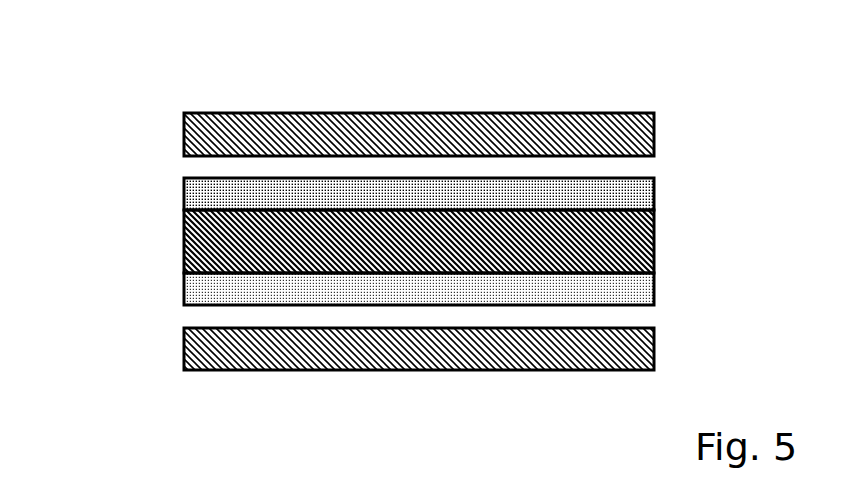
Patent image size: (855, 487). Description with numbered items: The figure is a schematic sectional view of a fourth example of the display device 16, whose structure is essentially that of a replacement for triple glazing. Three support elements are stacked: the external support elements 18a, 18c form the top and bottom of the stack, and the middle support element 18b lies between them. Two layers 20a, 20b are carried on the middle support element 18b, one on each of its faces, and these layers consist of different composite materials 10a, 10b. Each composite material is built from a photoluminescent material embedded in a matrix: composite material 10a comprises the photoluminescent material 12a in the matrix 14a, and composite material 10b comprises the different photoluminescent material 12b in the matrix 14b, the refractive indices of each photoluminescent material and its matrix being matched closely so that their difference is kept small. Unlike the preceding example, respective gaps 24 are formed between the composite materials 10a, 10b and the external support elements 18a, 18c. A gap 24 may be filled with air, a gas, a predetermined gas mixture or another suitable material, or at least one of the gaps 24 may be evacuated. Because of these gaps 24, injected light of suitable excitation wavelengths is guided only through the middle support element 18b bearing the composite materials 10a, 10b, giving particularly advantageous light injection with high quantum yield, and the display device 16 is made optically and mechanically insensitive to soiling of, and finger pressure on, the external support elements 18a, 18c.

The display device 16 is at (677, 107).
The external support element 18a is at (280, 133).
The middle support element 18b is at (258, 243).
The external support element 18c is at (223, 347).
The layer 20b is at (666, 194).
The layer 20a is at (666, 285).
The matrix 14a is at (492, 190).
The matrix 14b is at (600, 297).
The photoluminescent material 12a is at (397, 188).
The photoluminescent material 12b is at (460, 293).
The composite material 10b is at (140, 202).
The composite material 10a is at (140, 285).
The gap 24 is at (183, 167).